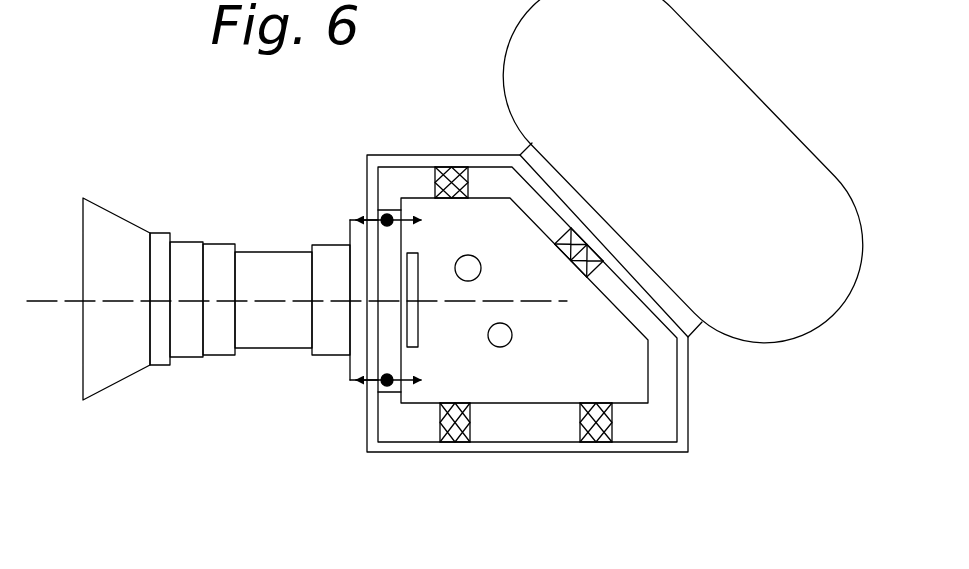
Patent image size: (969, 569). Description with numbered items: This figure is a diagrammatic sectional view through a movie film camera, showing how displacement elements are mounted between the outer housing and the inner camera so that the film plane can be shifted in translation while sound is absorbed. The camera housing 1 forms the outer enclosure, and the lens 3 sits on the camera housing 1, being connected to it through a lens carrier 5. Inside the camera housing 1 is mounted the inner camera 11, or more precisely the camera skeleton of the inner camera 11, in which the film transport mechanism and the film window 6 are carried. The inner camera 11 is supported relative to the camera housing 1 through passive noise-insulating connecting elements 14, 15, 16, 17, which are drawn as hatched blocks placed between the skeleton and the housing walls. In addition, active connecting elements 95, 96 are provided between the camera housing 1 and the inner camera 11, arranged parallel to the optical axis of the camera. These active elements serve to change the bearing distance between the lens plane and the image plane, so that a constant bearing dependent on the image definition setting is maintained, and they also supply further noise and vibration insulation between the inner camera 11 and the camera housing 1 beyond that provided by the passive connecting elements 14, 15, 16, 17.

The camera housing 1 is at (687, 385).
The lens 3 is at (263, 272).
The lens carrier 5 is at (357, 215).
The film window 6 is at (413, 263).
The inner camera 11 is at (517, 370).
The passive noise-insulating connecting element 14 is at (447, 167).
The passive noise-insulating connecting element 15 is at (467, 442).
The passive noise-insulating connecting element 16 is at (593, 240).
The passive noise-insulating connecting element 17 is at (600, 415).
The active connecting element 95 is at (402, 210).
The active connecting element 96 is at (389, 393).